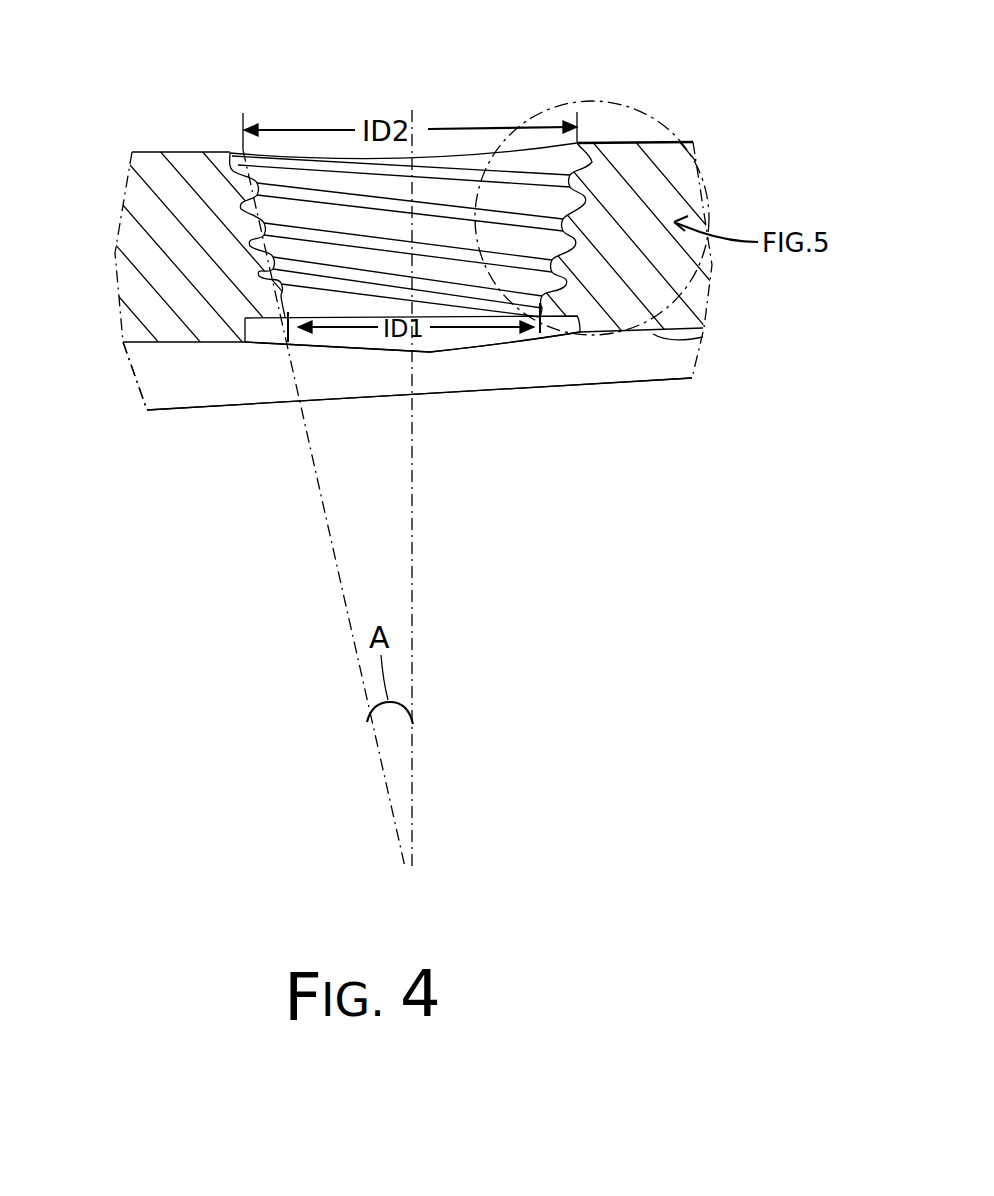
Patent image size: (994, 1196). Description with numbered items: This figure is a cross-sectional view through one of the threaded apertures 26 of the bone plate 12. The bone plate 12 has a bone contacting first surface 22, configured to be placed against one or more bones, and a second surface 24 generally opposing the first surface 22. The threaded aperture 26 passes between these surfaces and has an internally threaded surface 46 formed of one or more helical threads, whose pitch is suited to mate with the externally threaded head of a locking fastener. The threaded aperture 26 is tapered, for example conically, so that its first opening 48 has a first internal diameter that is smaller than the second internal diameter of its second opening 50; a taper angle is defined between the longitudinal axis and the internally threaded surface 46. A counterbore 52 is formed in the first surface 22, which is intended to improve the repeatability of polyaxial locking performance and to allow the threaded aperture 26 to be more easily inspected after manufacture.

The bone plate 12 is at (722, 103).
The first surface 22 is at (175, 343).
The second surface 24 is at (153, 151).
The threaded aperture 26 is at (590, 204).
The internally threaded surface 46 is at (264, 160).
The first opening 48 is at (483, 340).
The second opening 50 is at (323, 152).
The counterbore 52 is at (244, 322).